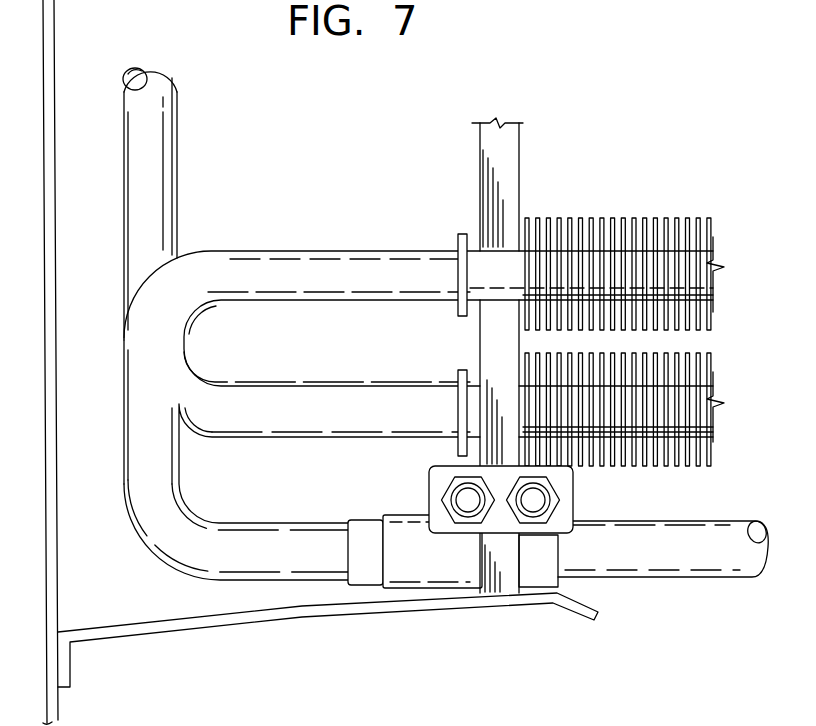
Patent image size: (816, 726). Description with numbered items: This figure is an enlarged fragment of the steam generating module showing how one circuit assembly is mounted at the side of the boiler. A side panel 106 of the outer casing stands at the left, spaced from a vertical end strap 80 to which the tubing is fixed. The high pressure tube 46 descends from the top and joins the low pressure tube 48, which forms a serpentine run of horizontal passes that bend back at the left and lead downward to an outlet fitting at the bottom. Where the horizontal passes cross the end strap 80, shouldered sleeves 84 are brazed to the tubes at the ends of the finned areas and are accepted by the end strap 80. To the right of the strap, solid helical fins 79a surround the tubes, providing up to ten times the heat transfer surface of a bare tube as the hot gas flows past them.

The side panel 106 is at (55, 63).
The high pressure tube 46 is at (178, 108).
The low pressure tube 48 is at (124, 425).
The end strap 80 is at (480, 137).
The shouldered sleeve 84 is at (468, 240).
The helical fin 79a is at (593, 218).